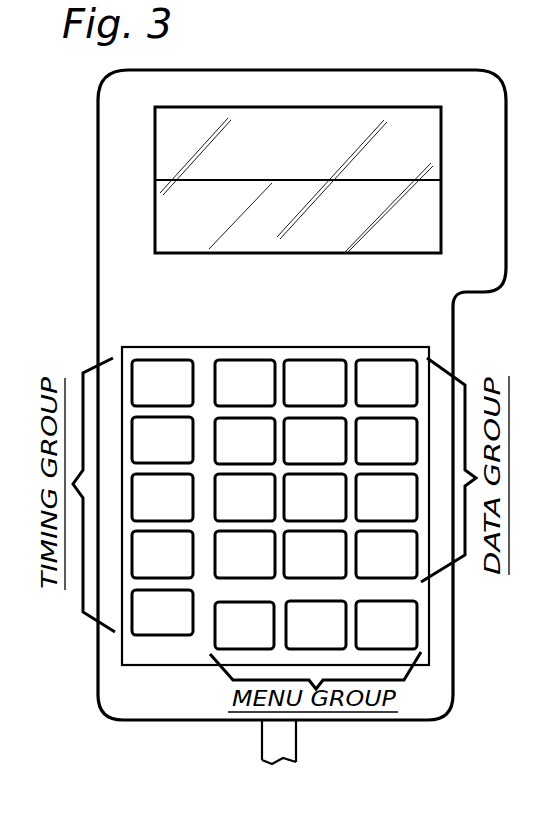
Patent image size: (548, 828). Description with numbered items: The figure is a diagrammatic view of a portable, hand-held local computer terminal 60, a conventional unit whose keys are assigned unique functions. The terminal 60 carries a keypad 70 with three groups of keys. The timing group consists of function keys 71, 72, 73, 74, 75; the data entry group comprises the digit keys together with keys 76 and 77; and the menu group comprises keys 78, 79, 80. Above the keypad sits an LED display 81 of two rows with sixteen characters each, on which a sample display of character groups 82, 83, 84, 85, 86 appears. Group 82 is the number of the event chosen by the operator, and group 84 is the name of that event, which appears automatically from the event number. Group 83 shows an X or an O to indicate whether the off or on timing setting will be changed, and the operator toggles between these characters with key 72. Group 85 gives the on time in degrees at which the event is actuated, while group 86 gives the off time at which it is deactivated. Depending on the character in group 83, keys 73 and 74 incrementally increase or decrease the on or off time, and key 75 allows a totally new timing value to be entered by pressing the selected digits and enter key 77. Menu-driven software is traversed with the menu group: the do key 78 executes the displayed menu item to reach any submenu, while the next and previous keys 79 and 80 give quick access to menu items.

The local computer terminal 60 is at (441, 698).
The keypad 70 is at (368, 347).
The event reset key 71 is at (140, 368).
The on/off key 72 is at (185, 428).
The jog up key 73 is at (137, 512).
The jog down key 74 is at (140, 572).
The new setting key 75 is at (157, 632).
The do key 76 is at (221, 639).
The enter key 77 is at (374, 564).
The do key 78 is at (231, 567).
The next key 79 is at (334, 610).
The previous key 80 is at (411, 619).
The LED display 81 is at (444, 127).
The event number character group 82 is at (178, 146).
The on/off indicator character group 83 is at (190, 137).
The event name character group 84 is at (277, 128).
The on time character group 85 is at (404, 133).
The off time character group 86 is at (178, 220).